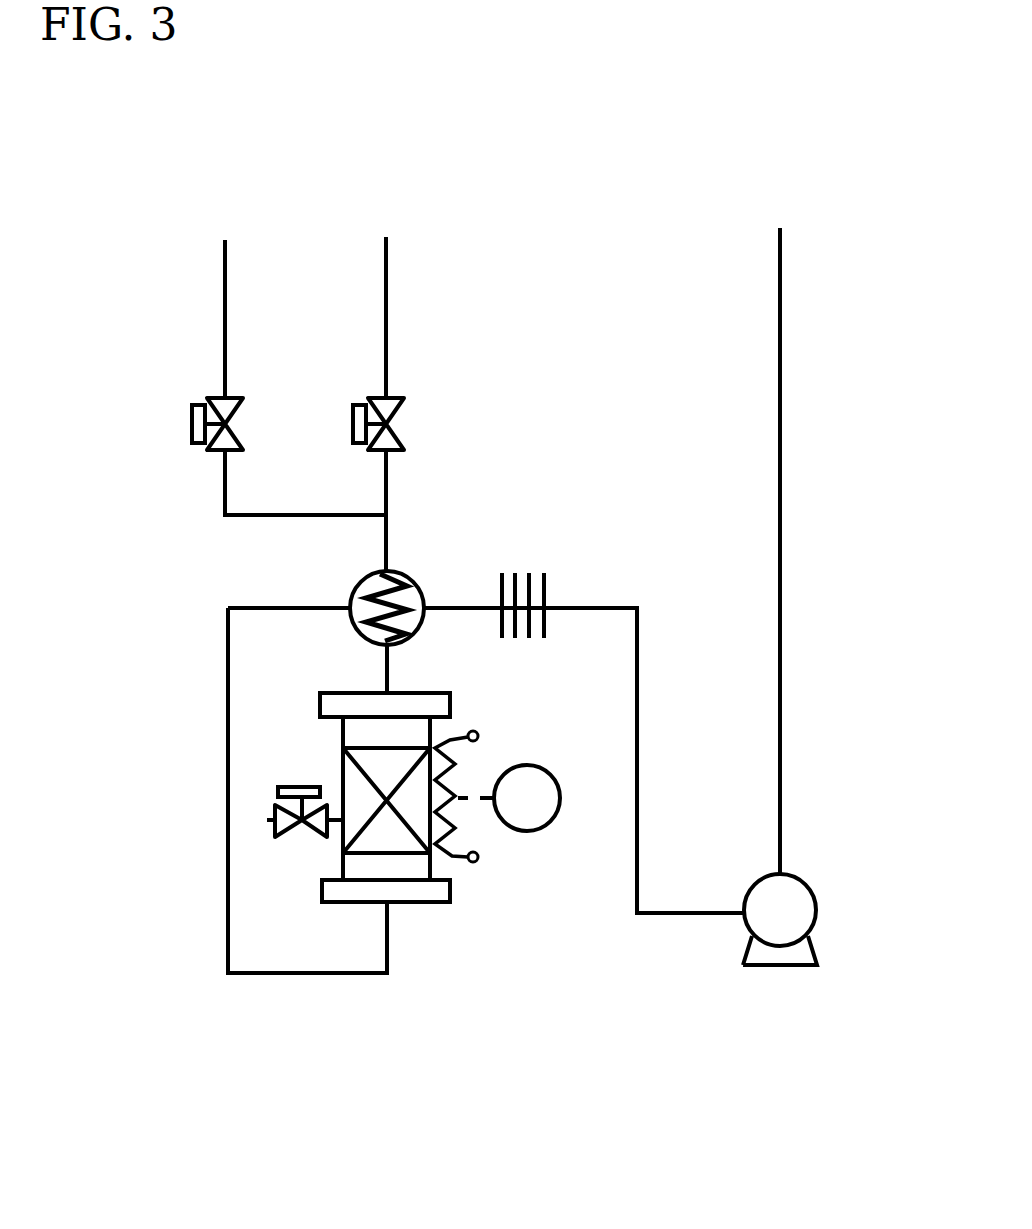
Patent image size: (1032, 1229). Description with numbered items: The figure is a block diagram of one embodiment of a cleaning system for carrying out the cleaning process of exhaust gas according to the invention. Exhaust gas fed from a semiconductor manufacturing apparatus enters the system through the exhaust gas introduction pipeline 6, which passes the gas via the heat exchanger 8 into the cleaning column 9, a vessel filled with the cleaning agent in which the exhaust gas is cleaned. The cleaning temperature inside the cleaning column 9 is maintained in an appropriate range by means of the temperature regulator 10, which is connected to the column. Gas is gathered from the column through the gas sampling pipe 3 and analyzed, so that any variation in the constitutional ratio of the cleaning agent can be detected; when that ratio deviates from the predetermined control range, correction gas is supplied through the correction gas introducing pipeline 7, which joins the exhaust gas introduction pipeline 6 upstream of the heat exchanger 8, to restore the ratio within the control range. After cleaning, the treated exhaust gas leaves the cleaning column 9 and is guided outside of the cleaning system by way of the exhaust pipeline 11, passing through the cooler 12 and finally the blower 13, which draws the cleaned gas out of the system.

The gas sampling pipe 3 is at (267, 820).
The exhaust gas introduction pipeline 6 is at (388, 322).
The correction gas introducing pipeline 7 is at (228, 322).
The heat exchanger 8 is at (418, 588).
The cleaning column 9 is at (343, 840).
The temperature regulator 10 is at (547, 765).
The exhaust pipeline 11 is at (225, 758).
The cooler 12 is at (547, 587).
The blower 13 is at (807, 883).